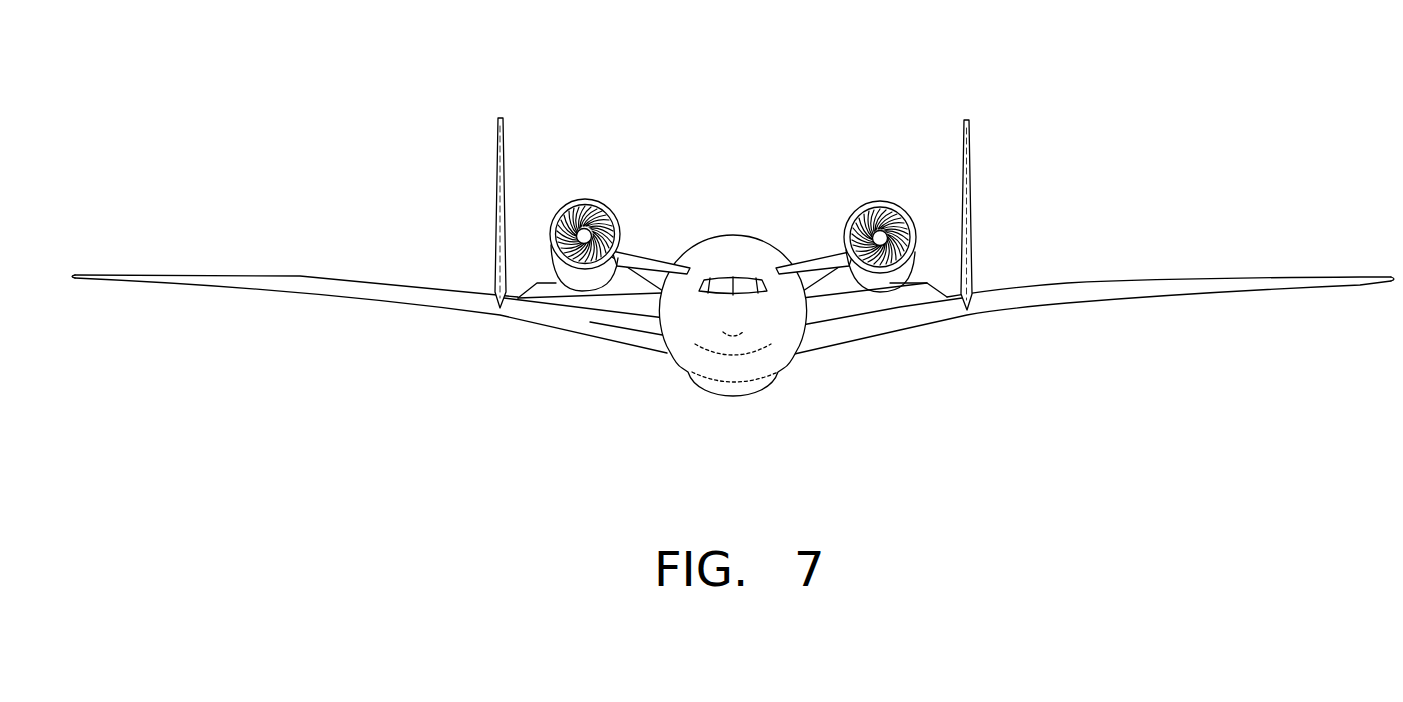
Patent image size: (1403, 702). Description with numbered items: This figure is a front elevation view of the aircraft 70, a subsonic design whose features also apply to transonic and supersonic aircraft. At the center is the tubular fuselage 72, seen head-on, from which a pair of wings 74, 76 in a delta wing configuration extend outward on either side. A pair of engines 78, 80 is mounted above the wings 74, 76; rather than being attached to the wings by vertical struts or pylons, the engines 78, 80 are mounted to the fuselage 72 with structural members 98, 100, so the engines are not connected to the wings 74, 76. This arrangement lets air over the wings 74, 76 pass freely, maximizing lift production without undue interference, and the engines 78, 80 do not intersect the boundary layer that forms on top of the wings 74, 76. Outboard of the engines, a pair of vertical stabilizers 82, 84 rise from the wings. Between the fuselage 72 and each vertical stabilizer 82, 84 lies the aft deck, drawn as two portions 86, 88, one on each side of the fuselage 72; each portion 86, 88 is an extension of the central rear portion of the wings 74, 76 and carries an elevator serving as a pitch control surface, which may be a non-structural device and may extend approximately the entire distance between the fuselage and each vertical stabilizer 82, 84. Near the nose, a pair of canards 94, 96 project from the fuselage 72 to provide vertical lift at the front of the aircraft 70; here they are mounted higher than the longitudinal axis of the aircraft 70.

The aircraft 70 is at (823, 91).
The tubular fuselage 72 is at (718, 266).
The wing 74 is at (1252, 278).
The wing 76 is at (214, 275).
The engine 78 is at (872, 200).
The engine 80 is at (587, 197).
The vertical stabilizer 82 is at (969, 165).
The vertical stabilizer 84 is at (498, 168).
The aft deck portion 86 is at (810, 316).
The aft deck portion 88 is at (617, 314).
The canard 94 is at (807, 262).
The canard 96 is at (658, 253).
The structural member 98 is at (833, 272).
The structural member 100 is at (628, 270).